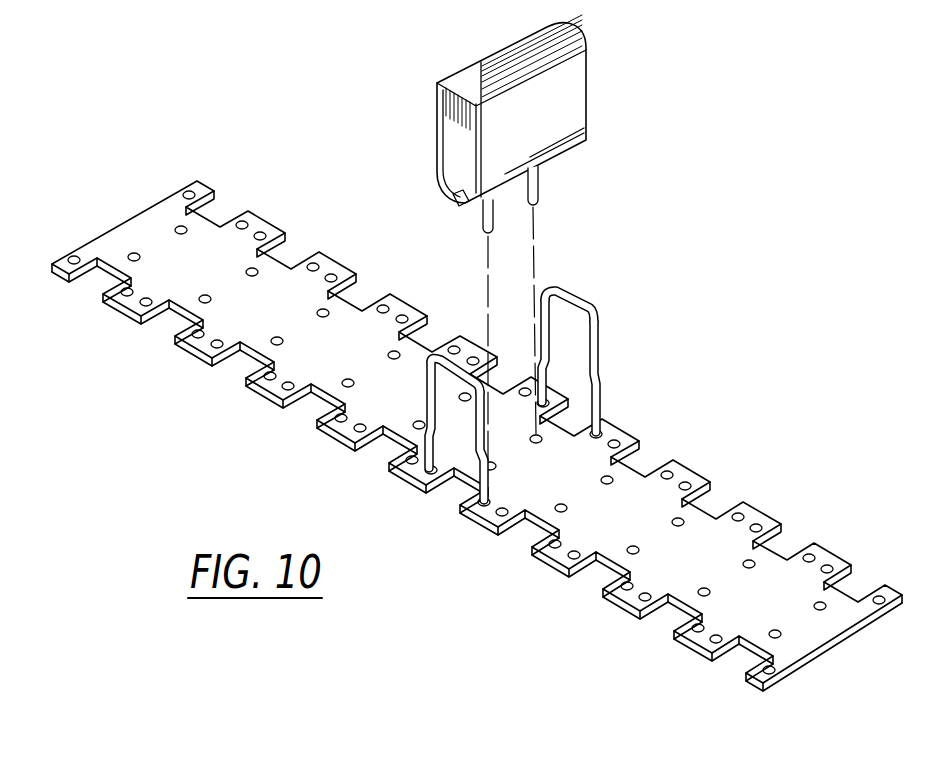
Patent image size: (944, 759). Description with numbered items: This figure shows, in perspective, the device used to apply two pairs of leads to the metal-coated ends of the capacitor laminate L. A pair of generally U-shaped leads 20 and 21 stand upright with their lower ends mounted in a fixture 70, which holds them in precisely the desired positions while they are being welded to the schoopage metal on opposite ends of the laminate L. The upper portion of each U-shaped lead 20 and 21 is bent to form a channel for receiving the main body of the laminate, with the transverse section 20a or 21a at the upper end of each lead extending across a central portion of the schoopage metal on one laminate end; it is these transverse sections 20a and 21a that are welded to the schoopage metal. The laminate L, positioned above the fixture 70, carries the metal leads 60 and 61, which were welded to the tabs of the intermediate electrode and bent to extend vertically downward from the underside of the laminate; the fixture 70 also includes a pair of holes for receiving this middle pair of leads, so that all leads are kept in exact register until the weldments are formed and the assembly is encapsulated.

The fixture 70 is at (763, 512).
The U-shaped lead 20 is at (457, 429).
The transverse section 20a is at (446, 377).
The U-shaped lead 21 is at (601, 340).
The transverse section 21a is at (582, 293).
The metal lead 60 is at (485, 222).
The metal lead 61 is at (540, 190).
The laminate L is at (493, 56).